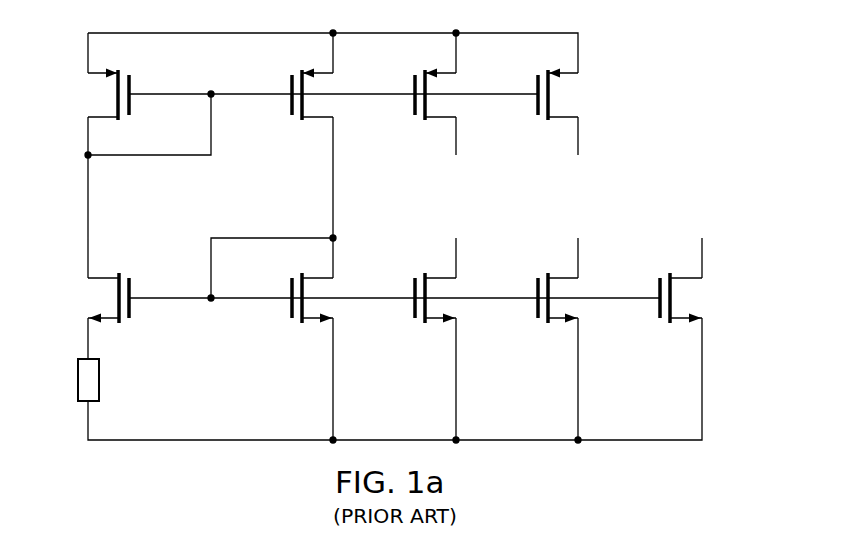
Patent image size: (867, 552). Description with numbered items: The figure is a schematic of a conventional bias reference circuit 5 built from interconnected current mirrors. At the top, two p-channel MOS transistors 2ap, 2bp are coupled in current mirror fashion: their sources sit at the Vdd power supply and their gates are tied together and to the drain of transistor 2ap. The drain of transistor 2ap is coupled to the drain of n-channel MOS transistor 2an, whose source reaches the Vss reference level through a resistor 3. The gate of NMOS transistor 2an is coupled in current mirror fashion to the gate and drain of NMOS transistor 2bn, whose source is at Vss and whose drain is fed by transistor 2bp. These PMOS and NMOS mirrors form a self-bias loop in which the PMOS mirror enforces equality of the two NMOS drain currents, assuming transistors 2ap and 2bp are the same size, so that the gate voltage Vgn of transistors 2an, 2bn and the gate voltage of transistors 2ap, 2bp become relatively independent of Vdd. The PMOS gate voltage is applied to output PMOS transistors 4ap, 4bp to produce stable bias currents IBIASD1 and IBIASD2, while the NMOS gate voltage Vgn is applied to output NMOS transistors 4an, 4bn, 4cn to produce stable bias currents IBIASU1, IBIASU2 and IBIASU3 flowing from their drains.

The PMOS transistor 2ap is at (132, 83).
The PMOS transistor 2bp is at (289, 83).
The NMOS transistor 2an is at (132, 308).
The NMOS transistor 2bn is at (289, 308).
The output PMOS transistor 4ap is at (412, 83).
The output PMOS transistor 4bp is at (535, 83).
The output NMOS transistor 4an is at (412, 308).
The output NMOS transistor 4bn is at (535, 308).
The output NMOS transistor 4cn is at (657, 308).
The resistor 3 is at (77, 380).
The bias reference circuit 5 is at (666, 58).